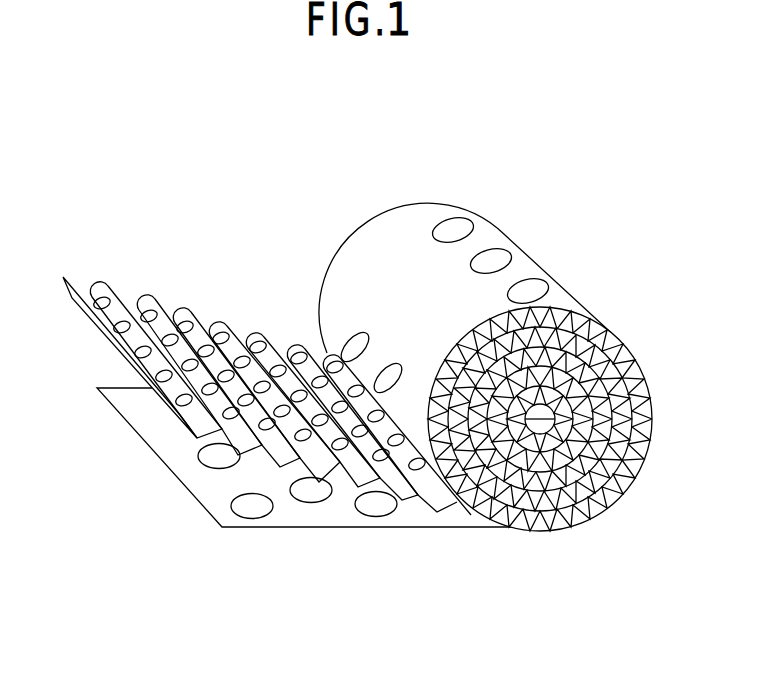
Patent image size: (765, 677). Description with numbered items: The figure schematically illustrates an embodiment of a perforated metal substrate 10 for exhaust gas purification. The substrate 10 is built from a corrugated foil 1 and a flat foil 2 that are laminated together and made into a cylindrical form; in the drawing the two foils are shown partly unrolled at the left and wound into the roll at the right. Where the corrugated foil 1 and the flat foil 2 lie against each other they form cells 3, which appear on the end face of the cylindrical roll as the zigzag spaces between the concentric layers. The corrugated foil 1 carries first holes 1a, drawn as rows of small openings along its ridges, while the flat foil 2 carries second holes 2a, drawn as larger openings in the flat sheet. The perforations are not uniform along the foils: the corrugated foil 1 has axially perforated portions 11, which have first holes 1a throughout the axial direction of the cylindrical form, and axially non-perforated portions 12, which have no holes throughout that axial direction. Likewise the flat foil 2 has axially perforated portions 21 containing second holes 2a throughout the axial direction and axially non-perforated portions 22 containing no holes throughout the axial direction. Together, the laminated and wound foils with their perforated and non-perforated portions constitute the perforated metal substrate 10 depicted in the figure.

The corrugated foil 1 is at (76, 300).
The first holes 1a is at (131, 313).
The axially perforated portions 11 is at (215, 340).
The axially non-perforated portions 12 is at (280, 339).
The flat foil 2 is at (252, 528).
The second holes 2a is at (312, 492).
The perforated metal substrate 10 is at (492, 359).
The axially perforated portions 21 is at (436, 206).
The axially non-perforated portions 22 is at (367, 268).
The cells 3 is at (617, 487).